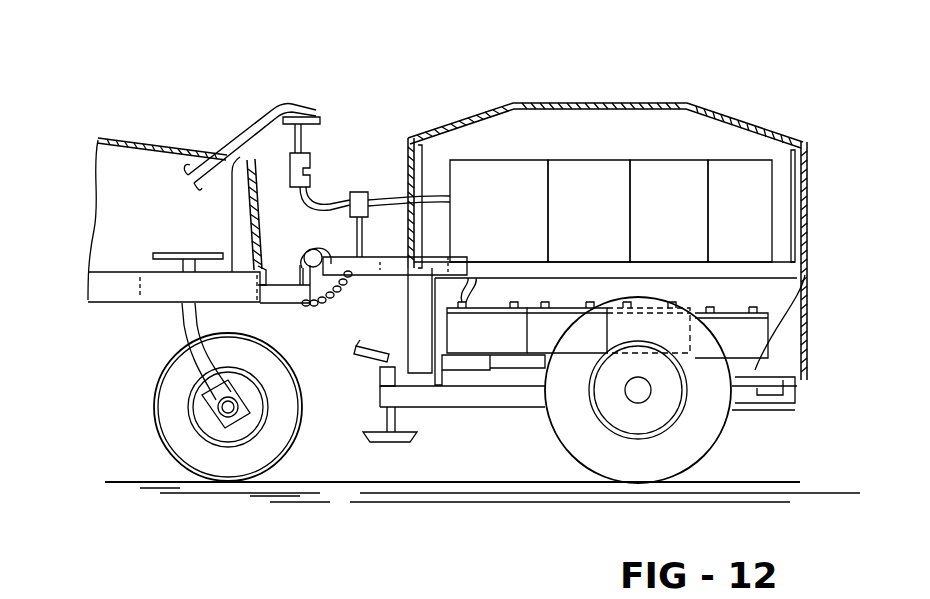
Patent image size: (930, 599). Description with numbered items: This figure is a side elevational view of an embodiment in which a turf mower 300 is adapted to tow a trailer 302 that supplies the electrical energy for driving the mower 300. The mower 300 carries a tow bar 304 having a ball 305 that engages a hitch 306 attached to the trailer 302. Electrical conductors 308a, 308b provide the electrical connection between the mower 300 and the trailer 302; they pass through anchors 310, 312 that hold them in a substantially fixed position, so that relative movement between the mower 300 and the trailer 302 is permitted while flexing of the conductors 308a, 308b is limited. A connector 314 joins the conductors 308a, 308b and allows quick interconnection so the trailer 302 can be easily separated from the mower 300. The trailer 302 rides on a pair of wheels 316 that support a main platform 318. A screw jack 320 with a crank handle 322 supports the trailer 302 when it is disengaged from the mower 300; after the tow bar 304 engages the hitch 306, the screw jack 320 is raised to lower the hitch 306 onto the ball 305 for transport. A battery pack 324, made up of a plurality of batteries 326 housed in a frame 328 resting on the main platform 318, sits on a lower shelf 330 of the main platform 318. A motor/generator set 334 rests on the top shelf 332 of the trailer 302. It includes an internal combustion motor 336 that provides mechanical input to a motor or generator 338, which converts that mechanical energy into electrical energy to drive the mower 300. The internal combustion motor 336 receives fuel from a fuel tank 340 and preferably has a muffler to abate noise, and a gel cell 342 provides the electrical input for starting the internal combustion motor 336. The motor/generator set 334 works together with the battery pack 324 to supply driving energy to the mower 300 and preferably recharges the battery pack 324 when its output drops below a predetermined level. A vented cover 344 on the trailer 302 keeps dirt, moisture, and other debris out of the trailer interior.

The turf mower 300 is at (125, 126).
The trailer 302 is at (668, 90).
The tow bar 304 is at (252, 304).
The ball 305 is at (258, 268).
The hitch 306 is at (302, 248).
The electrical conductor 308a is at (230, 138).
The electrical conductor 308b is at (400, 135).
The anchor 310 is at (300, 117).
The anchor 312 is at (360, 192).
The connector 314 is at (310, 152).
The wheels 316 is at (705, 440).
The main platform 318 is at (793, 404).
The screw jack 320 is at (366, 436).
The crank handle 322 is at (362, 348).
The battery pack 324 is at (730, 314).
The batteries 326 is at (487, 315).
The frame 328 is at (468, 370).
The lower shelf 330 is at (435, 408).
The top shelf 332 is at (775, 260).
The motor/generator set 334 is at (736, 158).
The internal combustion motor 336 is at (636, 160).
The motor or generator 338 is at (568, 160).
The fuel tank 340 is at (768, 118).
The gel cell 342 is at (511, 160).
The vented cover 344 is at (704, 112).